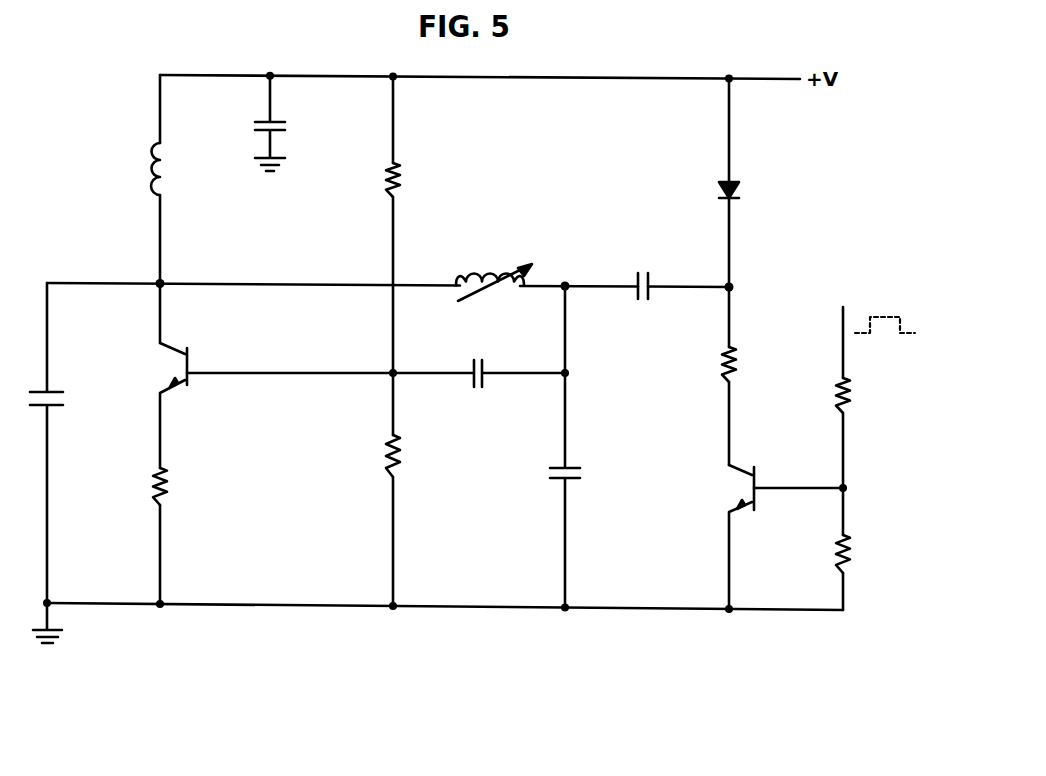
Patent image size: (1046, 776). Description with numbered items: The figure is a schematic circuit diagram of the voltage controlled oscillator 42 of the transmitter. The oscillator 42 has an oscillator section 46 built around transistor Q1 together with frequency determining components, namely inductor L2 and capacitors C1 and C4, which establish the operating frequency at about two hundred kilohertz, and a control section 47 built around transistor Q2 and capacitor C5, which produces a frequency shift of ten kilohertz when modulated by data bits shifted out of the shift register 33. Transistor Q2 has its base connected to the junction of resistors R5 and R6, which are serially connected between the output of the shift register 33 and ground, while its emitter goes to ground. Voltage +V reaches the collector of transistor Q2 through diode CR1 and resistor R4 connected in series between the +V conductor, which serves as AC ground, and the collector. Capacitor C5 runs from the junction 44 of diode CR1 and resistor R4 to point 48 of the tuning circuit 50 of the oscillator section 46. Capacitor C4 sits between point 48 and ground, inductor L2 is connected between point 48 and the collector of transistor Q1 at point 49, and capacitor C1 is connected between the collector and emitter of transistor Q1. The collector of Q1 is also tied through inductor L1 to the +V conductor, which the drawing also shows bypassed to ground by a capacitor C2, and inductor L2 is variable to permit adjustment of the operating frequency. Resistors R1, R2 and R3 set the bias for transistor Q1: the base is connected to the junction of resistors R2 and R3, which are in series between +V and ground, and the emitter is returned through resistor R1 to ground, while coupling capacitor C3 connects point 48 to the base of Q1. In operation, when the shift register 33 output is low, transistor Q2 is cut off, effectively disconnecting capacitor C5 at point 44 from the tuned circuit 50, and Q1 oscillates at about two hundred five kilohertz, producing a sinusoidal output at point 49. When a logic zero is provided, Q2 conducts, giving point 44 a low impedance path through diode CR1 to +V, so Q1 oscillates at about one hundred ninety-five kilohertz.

The voltage controlled oscillator 42 is at (536, 661).
The junction 44 is at (734, 286).
The oscillator section 46 is at (120, 473).
The control section 47 is at (678, 420).
The point 48 is at (572, 280).
The point 49 is at (162, 282).
The tuning circuit 50 is at (505, 392).
The shift register 33 is at (850, 290).
The inductor L1 is at (176, 209).
The inductor L2 is at (504, 268).
The capacitor C1 is at (56, 413).
The capacitor C2 is at (281, 141).
The coupling capacitor C3 is at (488, 344).
The capacitor C4 is at (548, 481).
The capacitor C5 is at (660, 282).
The resistor R1 is at (172, 497).
The resistor R2 is at (404, 190).
The resistor R3 is at (404, 472).
The resistor R4 is at (738, 375).
The resistor R5 is at (870, 404).
The resistor R6 is at (838, 560).
The transistor Q1 is at (170, 372).
The transistor Q2 is at (742, 488).
The diode CR1 is at (766, 203).